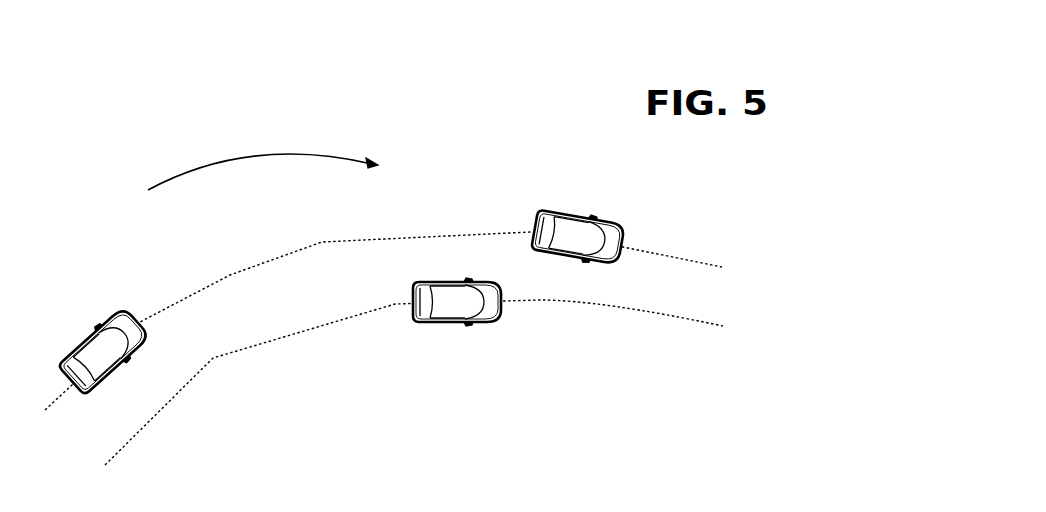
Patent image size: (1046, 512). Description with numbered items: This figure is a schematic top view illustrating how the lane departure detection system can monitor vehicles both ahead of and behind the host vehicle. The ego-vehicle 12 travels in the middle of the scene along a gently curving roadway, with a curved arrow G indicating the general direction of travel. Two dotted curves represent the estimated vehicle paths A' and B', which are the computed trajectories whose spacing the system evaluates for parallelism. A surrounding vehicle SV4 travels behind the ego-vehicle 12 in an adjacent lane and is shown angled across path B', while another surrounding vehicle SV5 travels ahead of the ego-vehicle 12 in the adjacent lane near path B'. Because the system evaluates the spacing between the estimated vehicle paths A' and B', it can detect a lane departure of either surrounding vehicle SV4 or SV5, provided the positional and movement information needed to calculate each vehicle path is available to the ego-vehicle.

The ego-vehicle 12 is at (454, 323).
The surrounding vehicle SV4 is at (84, 352).
The surrounding vehicle SV5 is at (574, 218).
The estimated vehicle path A' is at (414, 382).
The estimated vehicle path B' is at (383, 296).
The direction of travel / lateral acceleration arrow G is at (263, 160).